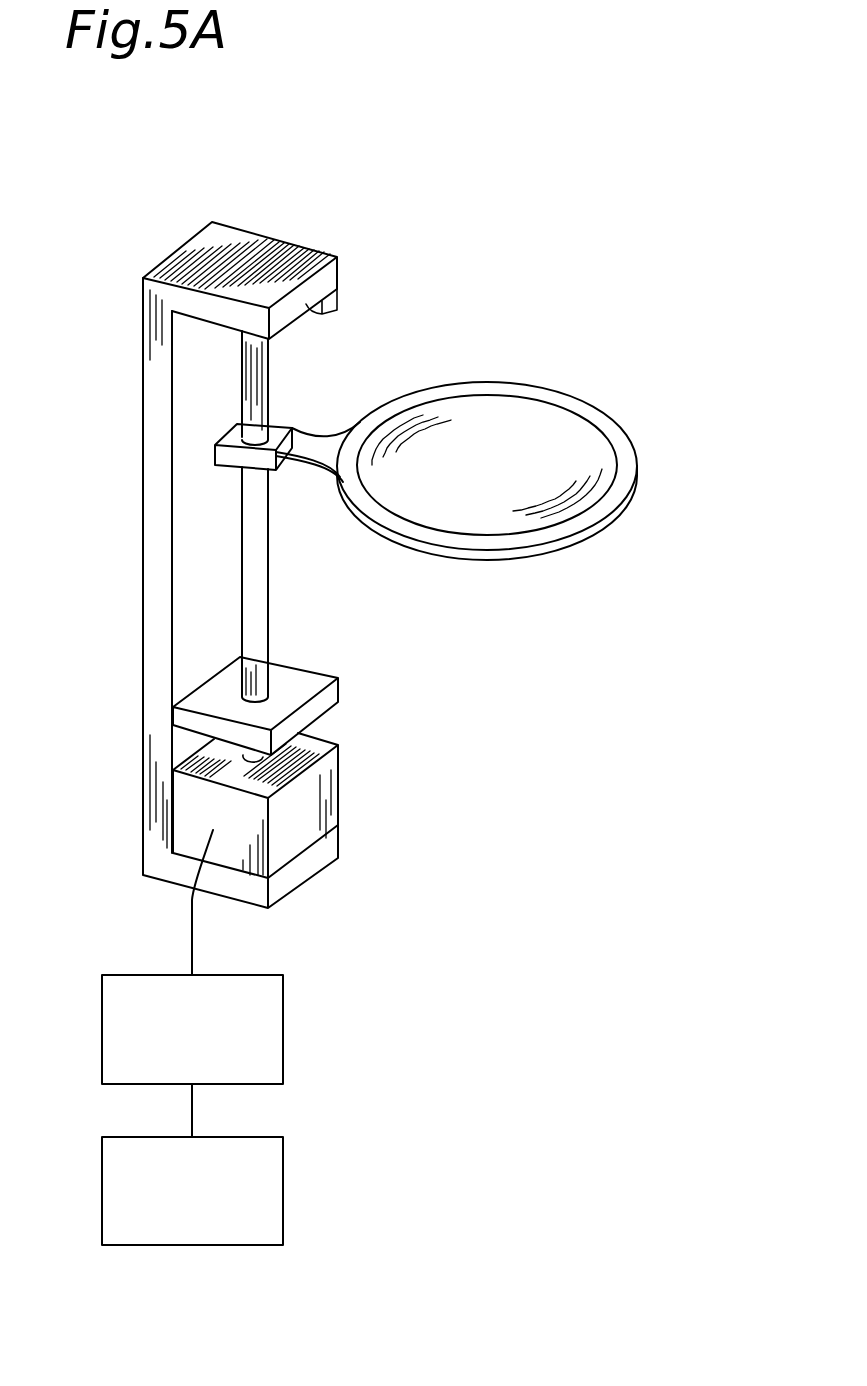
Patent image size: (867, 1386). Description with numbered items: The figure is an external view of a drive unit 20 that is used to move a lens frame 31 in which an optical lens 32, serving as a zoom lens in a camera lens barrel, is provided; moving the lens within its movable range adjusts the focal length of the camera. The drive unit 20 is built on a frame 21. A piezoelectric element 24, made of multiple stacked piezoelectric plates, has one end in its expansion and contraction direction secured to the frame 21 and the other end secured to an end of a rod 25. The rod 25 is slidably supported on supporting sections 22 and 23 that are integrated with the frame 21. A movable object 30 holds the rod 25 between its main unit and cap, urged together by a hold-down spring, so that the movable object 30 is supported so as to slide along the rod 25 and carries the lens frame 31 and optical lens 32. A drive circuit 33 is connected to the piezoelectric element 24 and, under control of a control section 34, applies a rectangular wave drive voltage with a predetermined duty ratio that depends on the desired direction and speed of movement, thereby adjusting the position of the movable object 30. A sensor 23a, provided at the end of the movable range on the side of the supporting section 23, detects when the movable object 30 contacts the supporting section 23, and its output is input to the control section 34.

The drive unit 20 is at (503, 252).
The frame 21 is at (148, 304).
The supporting section 22 is at (325, 700).
The supporting section 23 is at (272, 248).
The sensor 23a is at (337, 297).
The piezoelectric element 24 is at (323, 818).
The rod 25 is at (253, 628).
The movable object 30 is at (278, 468).
The lens frame 31 is at (630, 473).
The optical lens 32 is at (563, 432).
The drive circuit 33 is at (283, 1040).
The control section 34 is at (283, 1205).